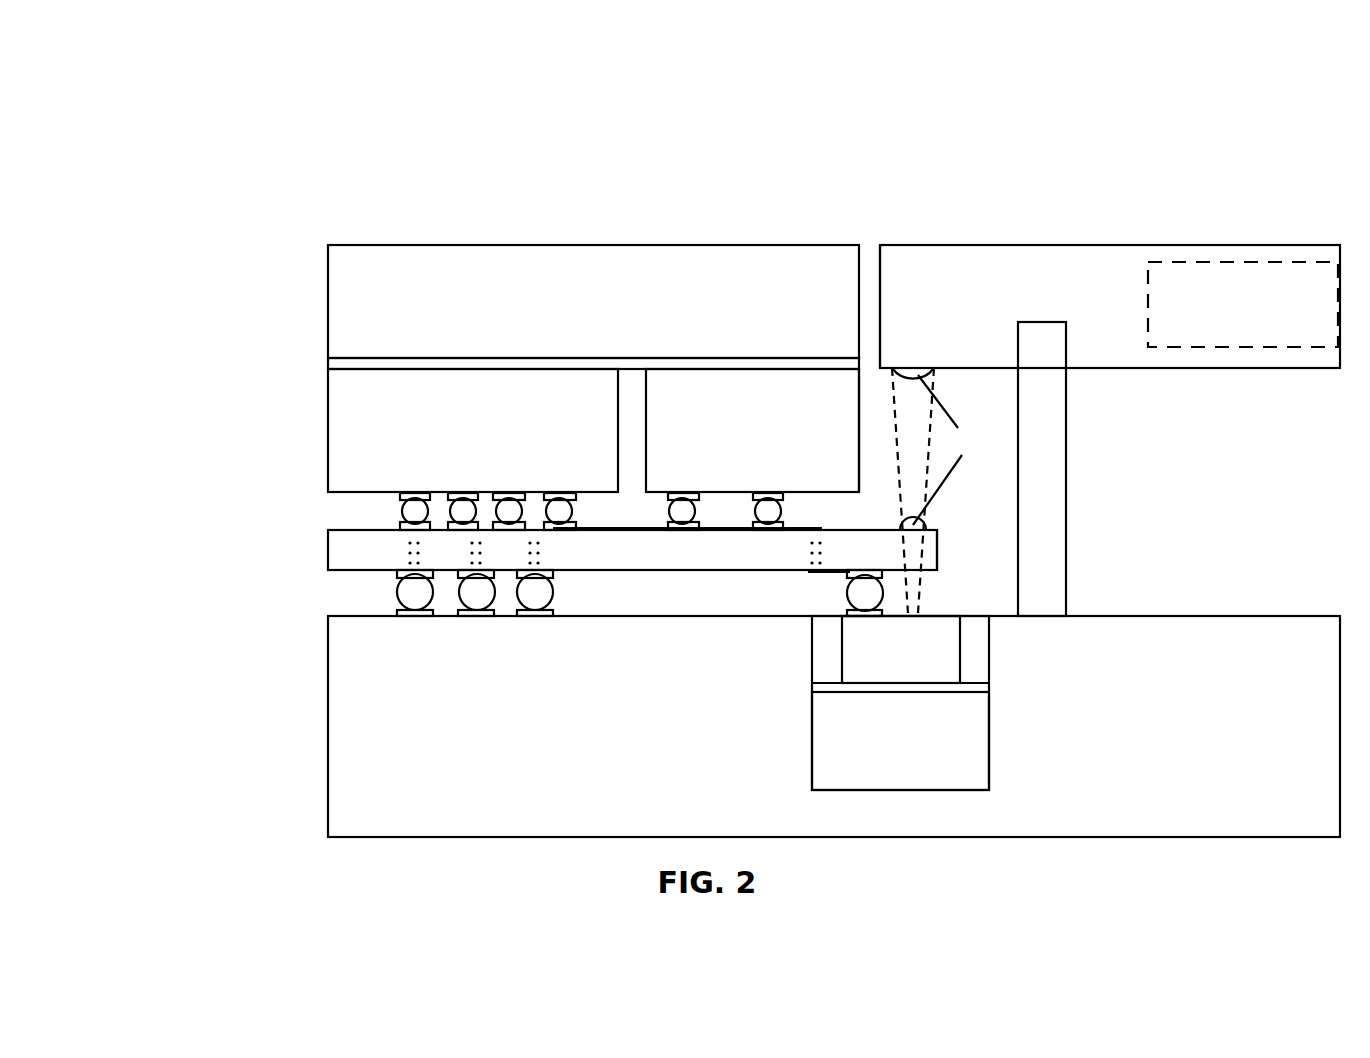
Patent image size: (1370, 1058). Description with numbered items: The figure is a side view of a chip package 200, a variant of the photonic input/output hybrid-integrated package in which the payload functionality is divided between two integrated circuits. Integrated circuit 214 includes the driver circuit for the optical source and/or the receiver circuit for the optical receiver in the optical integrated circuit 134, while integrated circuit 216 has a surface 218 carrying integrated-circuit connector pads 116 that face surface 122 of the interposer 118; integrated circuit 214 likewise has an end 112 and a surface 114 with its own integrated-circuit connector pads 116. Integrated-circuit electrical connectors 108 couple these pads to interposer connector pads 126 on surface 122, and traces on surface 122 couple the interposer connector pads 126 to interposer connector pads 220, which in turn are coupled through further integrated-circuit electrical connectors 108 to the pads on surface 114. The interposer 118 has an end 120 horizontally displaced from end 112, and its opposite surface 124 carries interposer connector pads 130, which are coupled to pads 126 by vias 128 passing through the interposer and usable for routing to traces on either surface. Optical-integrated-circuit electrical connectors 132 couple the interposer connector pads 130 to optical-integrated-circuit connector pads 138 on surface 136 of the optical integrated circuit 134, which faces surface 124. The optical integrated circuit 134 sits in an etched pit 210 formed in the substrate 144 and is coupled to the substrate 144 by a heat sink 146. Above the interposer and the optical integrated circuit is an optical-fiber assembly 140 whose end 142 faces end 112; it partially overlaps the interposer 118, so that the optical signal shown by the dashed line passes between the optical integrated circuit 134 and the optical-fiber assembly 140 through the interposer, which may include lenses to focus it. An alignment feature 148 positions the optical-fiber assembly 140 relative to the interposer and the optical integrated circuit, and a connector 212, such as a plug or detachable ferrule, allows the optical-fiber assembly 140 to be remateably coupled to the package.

The chip package 200 is at (317, 102).
The integrated circuit 216 is at (580, 408).
The surface 218 is at (482, 489).
The integrated circuit 214 is at (745, 410).
The surface 114 is at (710, 489).
The end 112 is at (857, 400).
The optical-fiber assembly 140 is at (995, 280).
The end 142 is at (883, 328).
The connector 212 is at (1231, 328).
The alignment feature 148 is at (1033, 338).
The integrated-circuit connector pads 116 is at (455, 491).
The integrated-circuit electrical connectors 108 is at (460, 508).
The interposer connector pads 126 is at (420, 530).
The interposer connector pads 220 is at (685, 530).
The interposer 118 is at (357, 565).
The surface 122 is at (720, 530).
The surface 124 is at (657, 572).
The end 120 is at (938, 537).
The vias 128 is at (813, 550).
The interposer connector pads 130 is at (465, 574).
The optical-integrated-circuit electrical connectors 132 is at (868, 593).
The optical-integrated-circuit connector pads 138 is at (877, 612).
The substrate 144 is at (1255, 711).
The etched pit 210 is at (812, 678).
The heat sink 146 is at (885, 761).
The optical integrated circuit 134 is at (940, 652).
The surface 136 is at (932, 618).